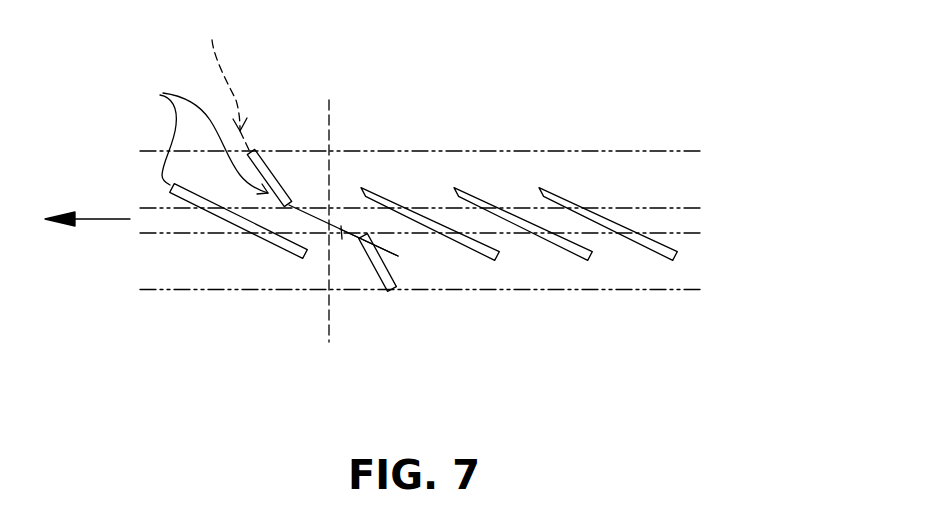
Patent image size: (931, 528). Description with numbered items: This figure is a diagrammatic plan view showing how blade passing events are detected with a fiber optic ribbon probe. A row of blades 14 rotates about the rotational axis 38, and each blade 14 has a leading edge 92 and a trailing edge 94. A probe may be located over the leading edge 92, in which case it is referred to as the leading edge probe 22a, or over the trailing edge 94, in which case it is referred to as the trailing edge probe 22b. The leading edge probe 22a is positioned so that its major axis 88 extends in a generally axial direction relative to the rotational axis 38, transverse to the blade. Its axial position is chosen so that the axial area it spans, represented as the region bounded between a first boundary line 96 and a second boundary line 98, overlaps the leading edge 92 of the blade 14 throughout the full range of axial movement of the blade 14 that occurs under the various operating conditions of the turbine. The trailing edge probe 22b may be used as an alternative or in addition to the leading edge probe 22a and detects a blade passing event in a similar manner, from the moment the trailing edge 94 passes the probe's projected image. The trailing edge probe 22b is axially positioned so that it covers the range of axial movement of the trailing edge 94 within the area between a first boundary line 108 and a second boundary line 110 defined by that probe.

The blade 14 is at (342, 230).
The leading edge probe 22a is at (262, 178).
The trailing edge probe 22b is at (379, 277).
The rotational axis 38 is at (330, 127).
The major axis 88 is at (224, 80).
The leading edge 92 is at (197, 137).
The trailing edge 94 is at (398, 256).
The first boundary line 96 is at (540, 151).
The second boundary line 98 is at (653, 208).
The first boundary line 108 is at (690, 233).
The second boundary line 110 is at (658, 290).